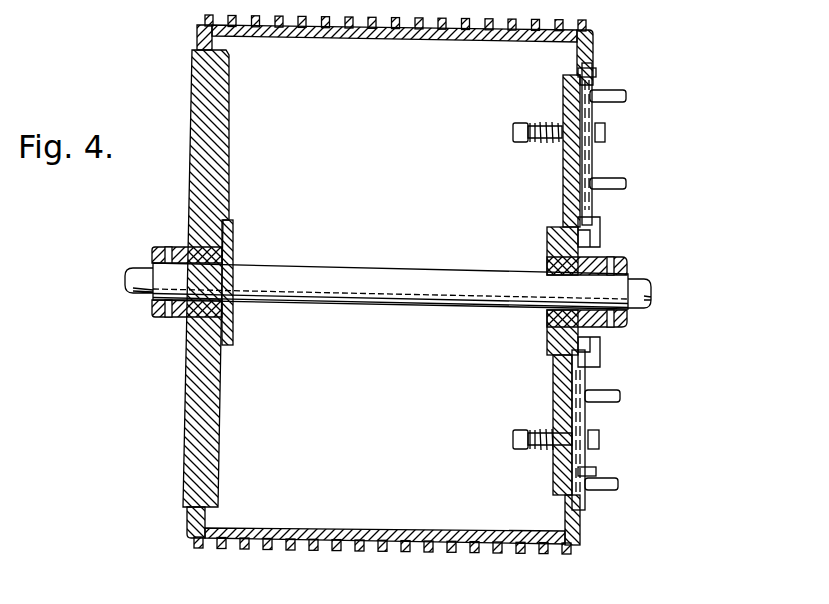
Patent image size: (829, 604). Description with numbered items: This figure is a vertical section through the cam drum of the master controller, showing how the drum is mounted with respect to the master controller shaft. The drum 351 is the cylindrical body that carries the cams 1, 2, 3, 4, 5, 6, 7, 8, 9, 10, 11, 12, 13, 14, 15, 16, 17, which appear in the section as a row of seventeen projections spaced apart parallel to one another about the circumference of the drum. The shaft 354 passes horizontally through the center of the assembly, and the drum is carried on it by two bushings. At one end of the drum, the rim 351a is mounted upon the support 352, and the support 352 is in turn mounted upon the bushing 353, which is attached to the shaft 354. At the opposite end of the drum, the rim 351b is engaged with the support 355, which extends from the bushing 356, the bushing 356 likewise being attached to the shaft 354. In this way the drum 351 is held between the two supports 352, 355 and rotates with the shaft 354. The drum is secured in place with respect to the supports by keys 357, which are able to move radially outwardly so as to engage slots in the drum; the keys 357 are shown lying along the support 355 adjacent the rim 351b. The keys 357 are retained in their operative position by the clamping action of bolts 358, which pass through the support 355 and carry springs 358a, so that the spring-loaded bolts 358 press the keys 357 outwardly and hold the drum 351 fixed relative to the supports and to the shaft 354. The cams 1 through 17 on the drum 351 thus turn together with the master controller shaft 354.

The drum 351 is at (303, 577).
The rim 351a is at (190, 513).
The rim 351b is at (594, 62).
The support 352 is at (190, 430).
The bushing 353 is at (183, 318).
The shaft 354 is at (138, 300).
The support 355 is at (562, 188).
The bushing 356 is at (600, 262).
The key 357 is at (592, 168).
The bolt 358 is at (606, 133).
The spring 358a is at (549, 147).
The cam 1 is at (572, 550).
The cam 2 is at (549, 549).
The cam 3 is at (526, 549).
The cam 4 is at (503, 549).
The cam 5 is at (480, 549).
The cam 6 is at (457, 549).
The cam 7 is at (434, 549).
The cam 8 is at (411, 549).
The cam 9 is at (388, 549).
The cam 10 is at (364, 549).
The cam 11 is at (341, 549).
The cam 12 is at (318, 549).
The cam 13 is at (295, 549).
The cam 14 is at (272, 549).
The cam 15 is at (249, 549).
The cam 16 is at (226, 549).
The cam 17 is at (203, 549).